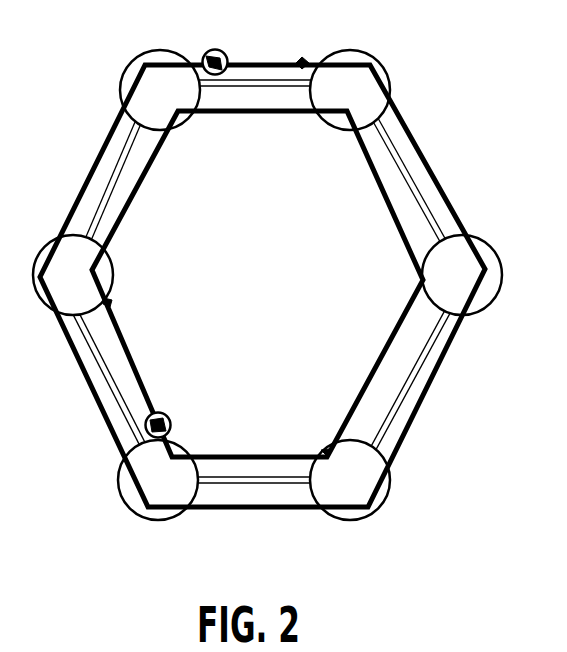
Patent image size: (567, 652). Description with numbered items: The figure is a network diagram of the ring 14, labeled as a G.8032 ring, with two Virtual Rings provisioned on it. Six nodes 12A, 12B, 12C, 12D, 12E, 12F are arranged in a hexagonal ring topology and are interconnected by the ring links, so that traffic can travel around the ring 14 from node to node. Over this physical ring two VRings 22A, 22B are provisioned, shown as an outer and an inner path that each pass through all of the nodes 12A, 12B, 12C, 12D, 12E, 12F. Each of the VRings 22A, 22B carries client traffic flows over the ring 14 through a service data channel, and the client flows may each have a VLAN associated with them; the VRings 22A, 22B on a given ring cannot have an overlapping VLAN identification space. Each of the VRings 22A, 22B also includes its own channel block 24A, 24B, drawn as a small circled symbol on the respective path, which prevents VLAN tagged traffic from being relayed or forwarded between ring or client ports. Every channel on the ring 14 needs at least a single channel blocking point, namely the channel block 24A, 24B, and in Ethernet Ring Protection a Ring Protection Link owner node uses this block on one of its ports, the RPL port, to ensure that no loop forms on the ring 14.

The node 12A is at (177, 101).
The node 12B is at (367, 101).
The node 12C is at (479, 286).
The node 12D is at (367, 491).
The node 12E is at (175, 491).
The node 12F is at (90, 286).
The ring 14 is at (268, 266).
The virtual ring 22A is at (438, 178).
The virtual ring 22B is at (362, 150).
The channel block 24A is at (222, 52).
The channel block 24B is at (168, 417).